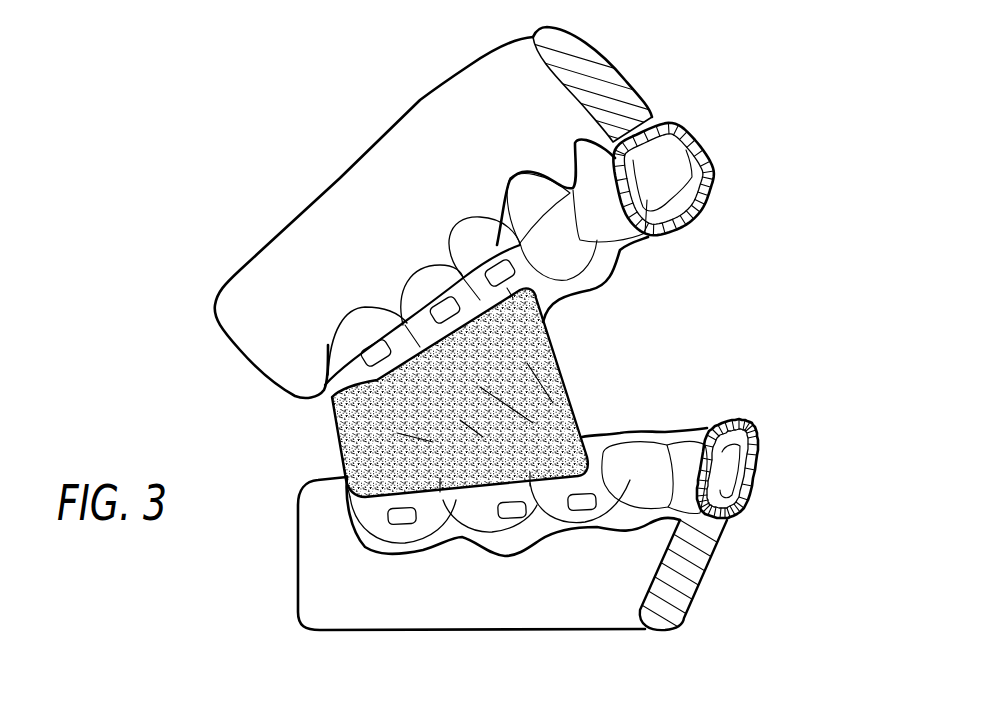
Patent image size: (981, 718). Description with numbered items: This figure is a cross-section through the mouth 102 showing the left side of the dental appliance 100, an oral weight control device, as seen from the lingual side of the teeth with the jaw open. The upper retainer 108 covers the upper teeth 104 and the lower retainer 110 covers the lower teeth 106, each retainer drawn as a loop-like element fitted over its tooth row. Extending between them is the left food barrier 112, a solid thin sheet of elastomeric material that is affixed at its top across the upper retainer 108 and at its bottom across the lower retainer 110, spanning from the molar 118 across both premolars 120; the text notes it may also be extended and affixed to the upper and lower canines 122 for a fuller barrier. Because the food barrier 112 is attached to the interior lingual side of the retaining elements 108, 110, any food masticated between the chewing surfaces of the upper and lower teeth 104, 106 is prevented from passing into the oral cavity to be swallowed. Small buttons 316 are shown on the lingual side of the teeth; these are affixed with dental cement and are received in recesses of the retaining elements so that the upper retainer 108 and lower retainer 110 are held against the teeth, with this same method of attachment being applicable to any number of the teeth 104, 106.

The dental appliance 100 is at (772, 140).
The mouth 102 is at (353, 138).
The upper teeth 104 is at (327, 357).
The lower teeth 106 is at (335, 522).
The upper retainer 108 is at (710, 185).
The lower retainer 110 is at (757, 436).
The left food barrier 112 is at (568, 382).
The molar 118 is at (333, 333).
The premolar 120 is at (420, 282).
The canine 122 is at (510, 178).
The button 316 is at (371, 348).